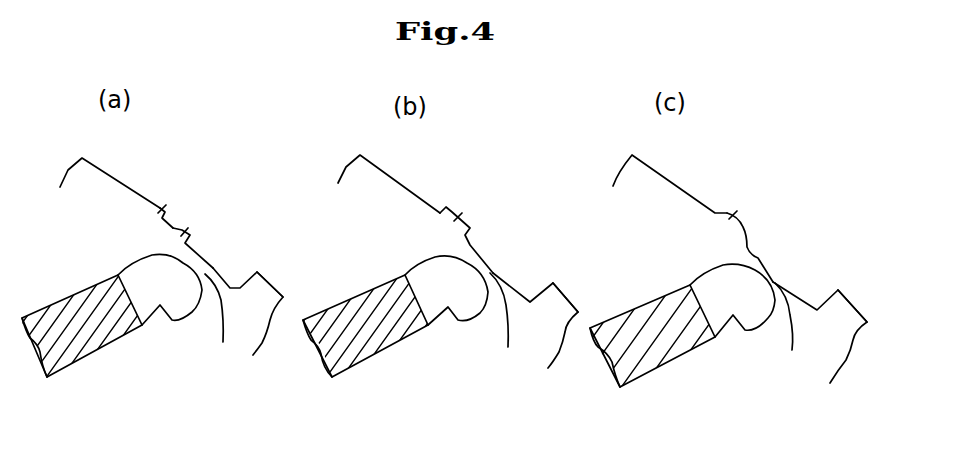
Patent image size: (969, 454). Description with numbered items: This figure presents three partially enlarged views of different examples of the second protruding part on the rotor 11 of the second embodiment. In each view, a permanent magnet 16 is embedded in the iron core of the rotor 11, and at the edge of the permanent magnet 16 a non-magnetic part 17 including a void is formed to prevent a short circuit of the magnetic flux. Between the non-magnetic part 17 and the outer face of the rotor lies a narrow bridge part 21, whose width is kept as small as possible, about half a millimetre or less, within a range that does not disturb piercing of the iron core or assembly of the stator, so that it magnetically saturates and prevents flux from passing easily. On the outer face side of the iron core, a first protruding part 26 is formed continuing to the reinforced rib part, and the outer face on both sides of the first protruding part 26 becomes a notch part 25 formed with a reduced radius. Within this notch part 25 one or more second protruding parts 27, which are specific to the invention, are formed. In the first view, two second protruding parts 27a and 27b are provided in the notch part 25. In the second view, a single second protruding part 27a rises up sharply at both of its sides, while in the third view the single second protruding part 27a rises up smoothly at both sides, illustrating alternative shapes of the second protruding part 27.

The rotor 11 is at (103, 190).
The permanent magnet 16 is at (87, 340).
The non-magnetic part 17 is at (187, 305).
The bridge part 21 is at (508, 326).
The notch part 25 is at (215, 268).
The first protruding part 26 is at (260, 290).
The second protruding part 27 is at (476, 223).
The second protruding part 27a is at (167, 213).
The second protruding part 27b is at (185, 232).